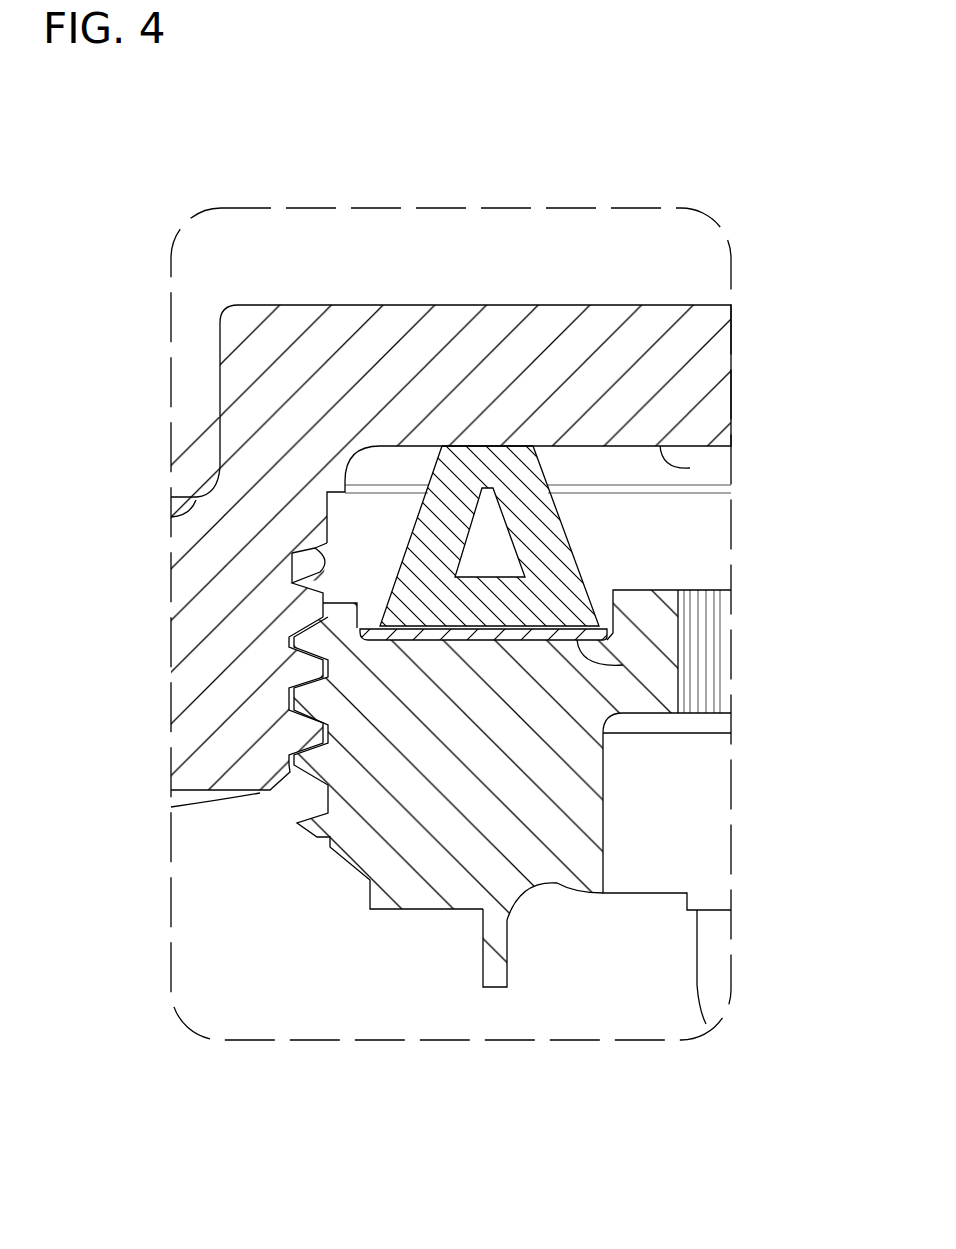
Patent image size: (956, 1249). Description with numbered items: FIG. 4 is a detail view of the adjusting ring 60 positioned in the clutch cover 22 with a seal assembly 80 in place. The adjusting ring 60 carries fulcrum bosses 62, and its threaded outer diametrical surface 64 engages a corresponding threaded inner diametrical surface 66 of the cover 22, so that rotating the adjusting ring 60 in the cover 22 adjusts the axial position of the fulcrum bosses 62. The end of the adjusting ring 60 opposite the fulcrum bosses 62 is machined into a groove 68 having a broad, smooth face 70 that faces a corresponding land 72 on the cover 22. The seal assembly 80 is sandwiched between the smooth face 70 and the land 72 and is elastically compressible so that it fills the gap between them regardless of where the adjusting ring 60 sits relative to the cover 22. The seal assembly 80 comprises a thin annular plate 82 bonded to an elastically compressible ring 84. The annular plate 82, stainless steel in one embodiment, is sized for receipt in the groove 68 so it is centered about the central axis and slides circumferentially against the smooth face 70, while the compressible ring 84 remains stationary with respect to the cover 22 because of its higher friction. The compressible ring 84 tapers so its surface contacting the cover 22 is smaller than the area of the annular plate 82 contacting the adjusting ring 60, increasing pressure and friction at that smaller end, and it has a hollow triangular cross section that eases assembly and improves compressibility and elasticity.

The cover 22 is at (535, 305).
The adjusting ring 60 is at (352, 862).
The fulcrum bosses 62 is at (492, 988).
The threaded outer diametrical surface 64 is at (312, 788).
The threaded inner diametrical surface 66 is at (292, 572).
The groove 68 is at (313, 590).
The smooth face 70 is at (592, 625).
The land 72 is at (690, 468).
The seal assembly 80 is at (578, 537).
The annular plate 82 is at (623, 665).
The compressible ring 84 is at (408, 542).